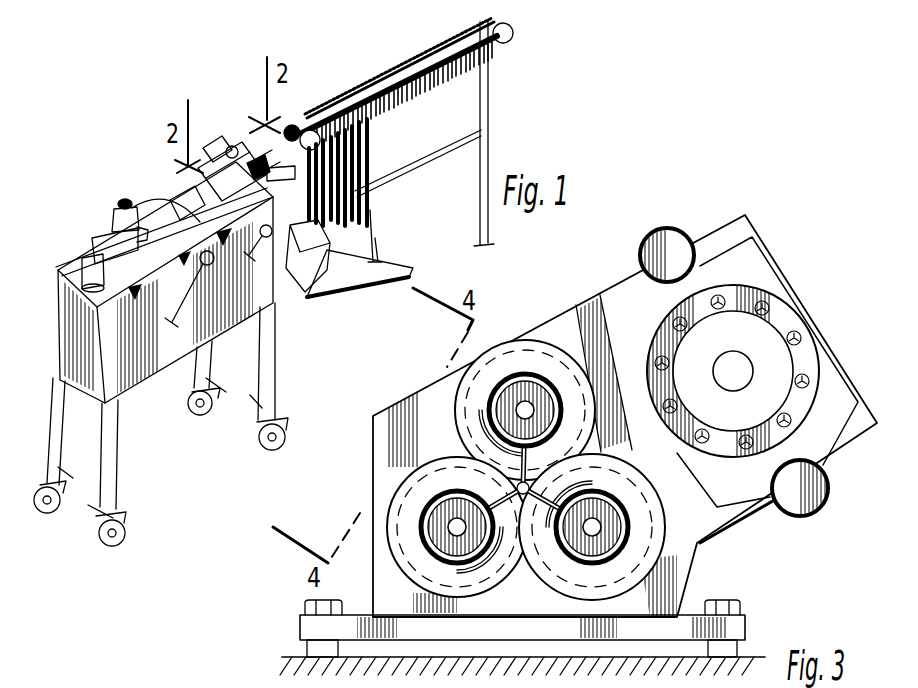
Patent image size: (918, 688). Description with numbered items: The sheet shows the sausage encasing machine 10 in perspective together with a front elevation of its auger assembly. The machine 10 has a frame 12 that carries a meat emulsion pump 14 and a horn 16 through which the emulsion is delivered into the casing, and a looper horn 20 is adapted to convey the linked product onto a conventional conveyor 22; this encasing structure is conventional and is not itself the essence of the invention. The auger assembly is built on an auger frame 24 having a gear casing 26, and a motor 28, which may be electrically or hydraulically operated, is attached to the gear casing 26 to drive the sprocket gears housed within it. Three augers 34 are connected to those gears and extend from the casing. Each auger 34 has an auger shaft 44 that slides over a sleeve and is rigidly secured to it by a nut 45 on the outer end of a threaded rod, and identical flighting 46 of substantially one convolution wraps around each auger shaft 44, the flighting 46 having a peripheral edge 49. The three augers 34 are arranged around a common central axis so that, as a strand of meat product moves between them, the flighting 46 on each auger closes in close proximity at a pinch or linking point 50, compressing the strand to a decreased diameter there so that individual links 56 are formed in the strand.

In FIG. 1, the sausage encasing machine 10 is at (105, 201).
In FIG. 1, the frame 12 is at (140, 385).
In FIG. 3, the frame 12 is at (287, 657).
In FIG. 1, the meat emulsion pump 14 is at (90, 237).
In FIG. 1, the horn 16 is at (183, 197).
In FIG. 1, the looper horn 20 is at (287, 127).
In FIG. 1, the conveyor 22 is at (327, 110).
In FIG. 1, the auger frame 24 is at (222, 142).
In FIG. 3, the auger frame 24 is at (690, 226).
In FIG. 3, the gear casing 26 is at (719, 238).
In FIG. 3, the motor 28 is at (786, 312).
In FIG. 3, the augers 34 is at (449, 374).
In FIG. 3, the auger shaft 44 is at (488, 410).
In FIG. 3, the nut 45 is at (640, 563).
In FIG. 3, the flighting 46 is at (457, 410).
In FIG. 3, the peripheral edge 49 is at (548, 338).
In FIG. 3, the linking point 50 is at (423, 497).
In FIG. 3, the links 56 is at (578, 335).